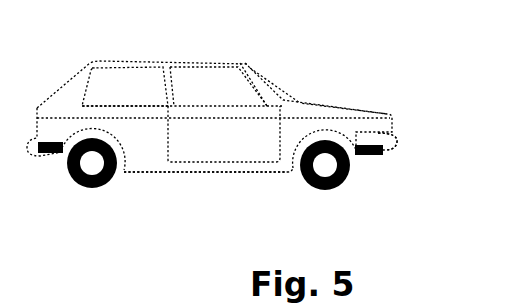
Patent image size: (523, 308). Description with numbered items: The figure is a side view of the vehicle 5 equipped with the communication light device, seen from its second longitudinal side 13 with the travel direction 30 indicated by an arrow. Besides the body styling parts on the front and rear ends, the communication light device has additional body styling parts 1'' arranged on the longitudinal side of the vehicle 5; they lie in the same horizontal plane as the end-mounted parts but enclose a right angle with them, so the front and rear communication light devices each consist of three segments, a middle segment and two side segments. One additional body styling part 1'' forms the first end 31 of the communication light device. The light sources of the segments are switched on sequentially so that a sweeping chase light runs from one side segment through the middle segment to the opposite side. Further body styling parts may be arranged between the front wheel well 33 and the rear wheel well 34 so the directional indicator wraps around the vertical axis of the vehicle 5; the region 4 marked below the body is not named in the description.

The vehicle 5 is at (340, 68).
The second longitudinal side 13 is at (133, 148).
The rear wheel well 34 is at (77, 133).
The additional body styling part 1'' is at (198, 198).
The front wheel well 33 is at (338, 133).
The first end of the communication light device 31 is at (388, 166).
The travel direction 30 is at (228, 206).
The vehicle underbody 4 is at (261, 183).